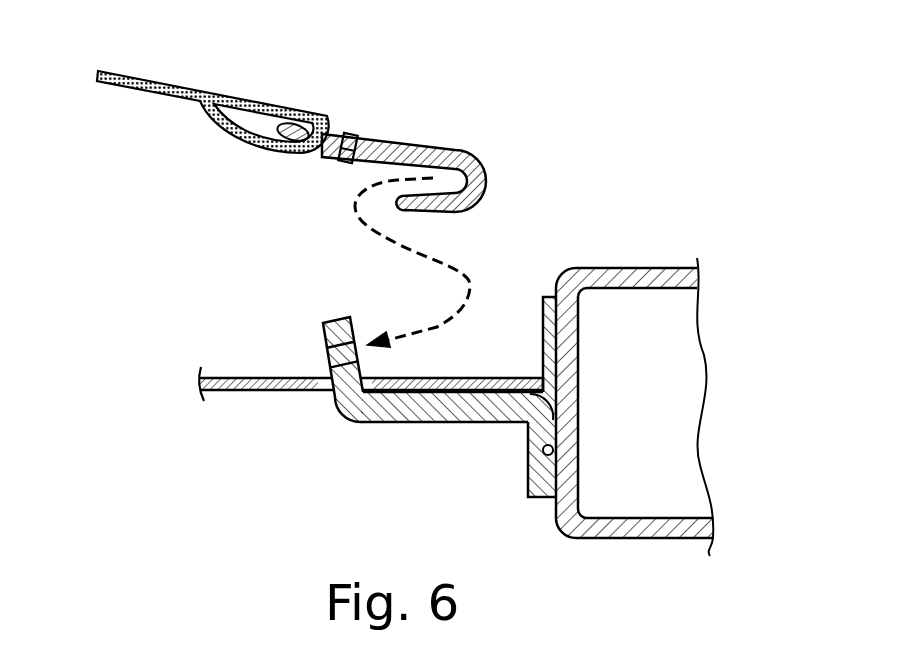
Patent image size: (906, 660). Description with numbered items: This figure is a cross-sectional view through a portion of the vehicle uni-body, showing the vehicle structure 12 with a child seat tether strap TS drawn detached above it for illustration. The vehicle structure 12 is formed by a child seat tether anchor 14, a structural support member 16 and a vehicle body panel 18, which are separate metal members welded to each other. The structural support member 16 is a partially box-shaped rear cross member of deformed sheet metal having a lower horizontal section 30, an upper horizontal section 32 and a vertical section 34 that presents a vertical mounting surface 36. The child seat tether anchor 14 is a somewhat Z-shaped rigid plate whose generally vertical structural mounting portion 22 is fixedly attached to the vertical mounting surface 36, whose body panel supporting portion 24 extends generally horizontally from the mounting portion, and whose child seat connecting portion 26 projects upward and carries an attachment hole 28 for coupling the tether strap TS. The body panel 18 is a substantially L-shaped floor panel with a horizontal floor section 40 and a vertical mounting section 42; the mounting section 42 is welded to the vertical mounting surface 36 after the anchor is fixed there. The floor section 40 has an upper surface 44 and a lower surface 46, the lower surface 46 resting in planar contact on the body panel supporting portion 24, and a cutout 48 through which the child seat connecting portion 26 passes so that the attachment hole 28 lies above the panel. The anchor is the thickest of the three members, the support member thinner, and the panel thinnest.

The vehicle structure 12 is at (634, 172).
The child seat tether anchor 14 is at (417, 433).
The structural support member 16 is at (661, 266).
The vehicle body panel 18 is at (265, 403).
The structural mounting portion 22 is at (528, 470).
The body panel supporting portion 24 is at (470, 422).
The child seat connecting portion 26 is at (338, 403).
The attachment hole 28 is at (336, 355).
The lower horizontal section 30 is at (627, 539).
The upper horizontal section 32 is at (643, 289).
The vertical section 34 is at (578, 408).
The vertical mounting surface 36 is at (554, 453).
The horizontal floor section 40 is at (438, 381).
The vertical mounting section 42 is at (543, 332).
The upper surface 44 is at (227, 376).
The lower surface 46 is at (237, 391).
The cutout 48 is at (322, 391).
The child seat tether member or strap TS is at (201, 116).